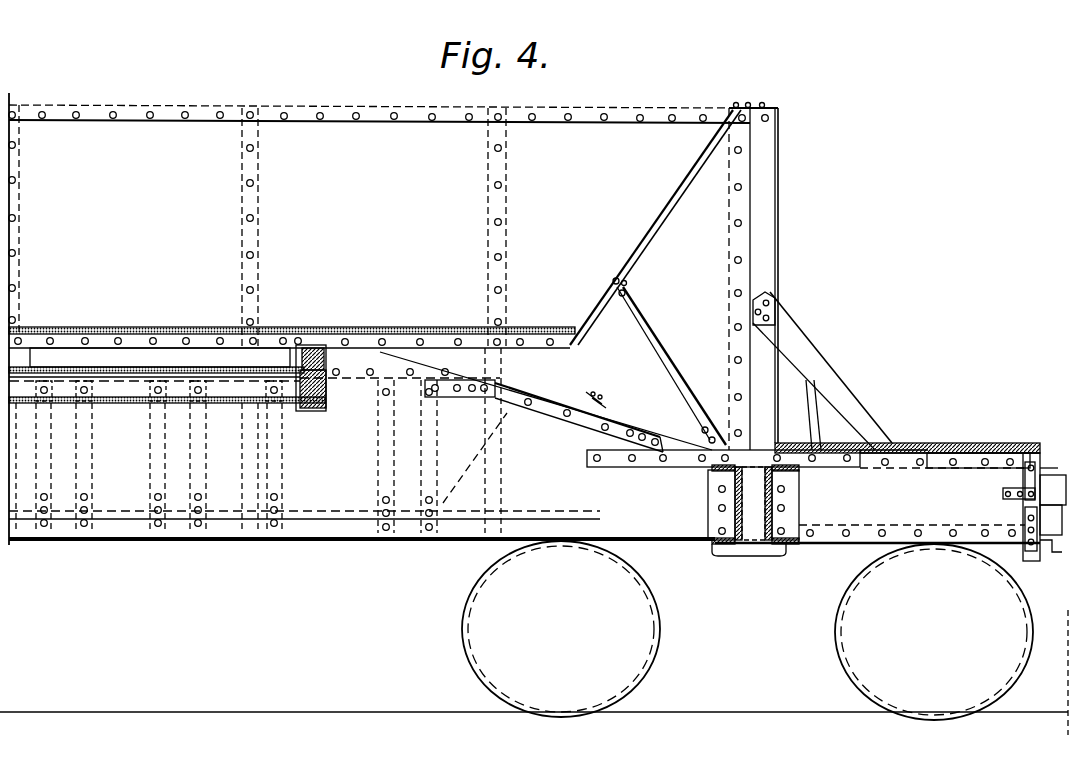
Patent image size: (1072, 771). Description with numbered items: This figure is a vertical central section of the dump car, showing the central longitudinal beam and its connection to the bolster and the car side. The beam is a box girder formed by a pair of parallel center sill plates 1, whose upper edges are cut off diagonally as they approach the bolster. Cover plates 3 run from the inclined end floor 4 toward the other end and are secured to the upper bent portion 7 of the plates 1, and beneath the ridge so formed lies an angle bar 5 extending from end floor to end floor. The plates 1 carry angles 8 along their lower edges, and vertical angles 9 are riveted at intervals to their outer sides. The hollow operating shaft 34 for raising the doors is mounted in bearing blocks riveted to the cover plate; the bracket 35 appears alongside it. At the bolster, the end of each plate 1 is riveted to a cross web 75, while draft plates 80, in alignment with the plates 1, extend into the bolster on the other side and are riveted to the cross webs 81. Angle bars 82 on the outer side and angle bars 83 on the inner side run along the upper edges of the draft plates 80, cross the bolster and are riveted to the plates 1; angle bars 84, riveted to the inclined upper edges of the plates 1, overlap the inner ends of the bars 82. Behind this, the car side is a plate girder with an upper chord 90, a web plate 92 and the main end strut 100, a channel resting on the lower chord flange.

The center sill plates 1 is at (362, 443).
The cover plates 3 is at (108, 328).
The inclined end floor 4 is at (620, 272).
The angle bar 5 is at (524, 330).
The upper bent portion 7 is at (198, 328).
The angles 8 is at (573, 524).
The vertical angles 9 is at (391, 483).
The operating shaft 34 is at (168, 372).
The bracket 35 is at (322, 362).
The cross web 75 is at (712, 494).
The draft plates 80 is at (826, 502).
The cross webs 81 is at (787, 497).
The angle bars 82 is at (965, 463).
The angle bars 83 is at (895, 468).
The angle bars 84 is at (585, 418).
The upper chord 90 is at (385, 122).
The plate 92 is at (284, 228).
The main end strut 100 is at (765, 213).